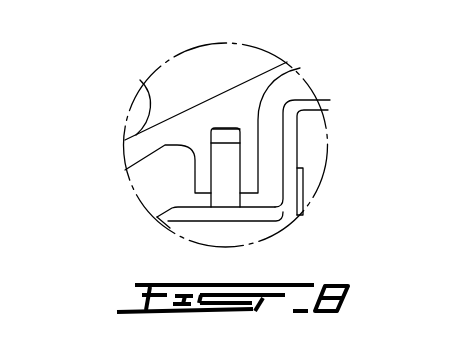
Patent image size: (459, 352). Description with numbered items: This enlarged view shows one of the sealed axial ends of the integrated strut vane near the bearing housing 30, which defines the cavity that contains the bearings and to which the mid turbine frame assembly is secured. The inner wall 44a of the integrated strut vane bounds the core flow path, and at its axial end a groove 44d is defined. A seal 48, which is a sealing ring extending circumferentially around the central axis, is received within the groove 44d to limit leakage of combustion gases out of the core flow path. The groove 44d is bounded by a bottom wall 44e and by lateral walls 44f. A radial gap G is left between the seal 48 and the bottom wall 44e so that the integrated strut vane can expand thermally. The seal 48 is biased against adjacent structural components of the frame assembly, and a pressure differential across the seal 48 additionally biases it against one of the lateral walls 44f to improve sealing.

The radial gap G is at (214, 129).
The bearing housing 30 is at (195, 207).
The inner wall 44a is at (250, 77).
The groove 44d is at (242, 130).
The bottom wall 44e is at (226, 128).
The lateral wall 44f is at (202, 181).
The seal 48 is at (262, 197).